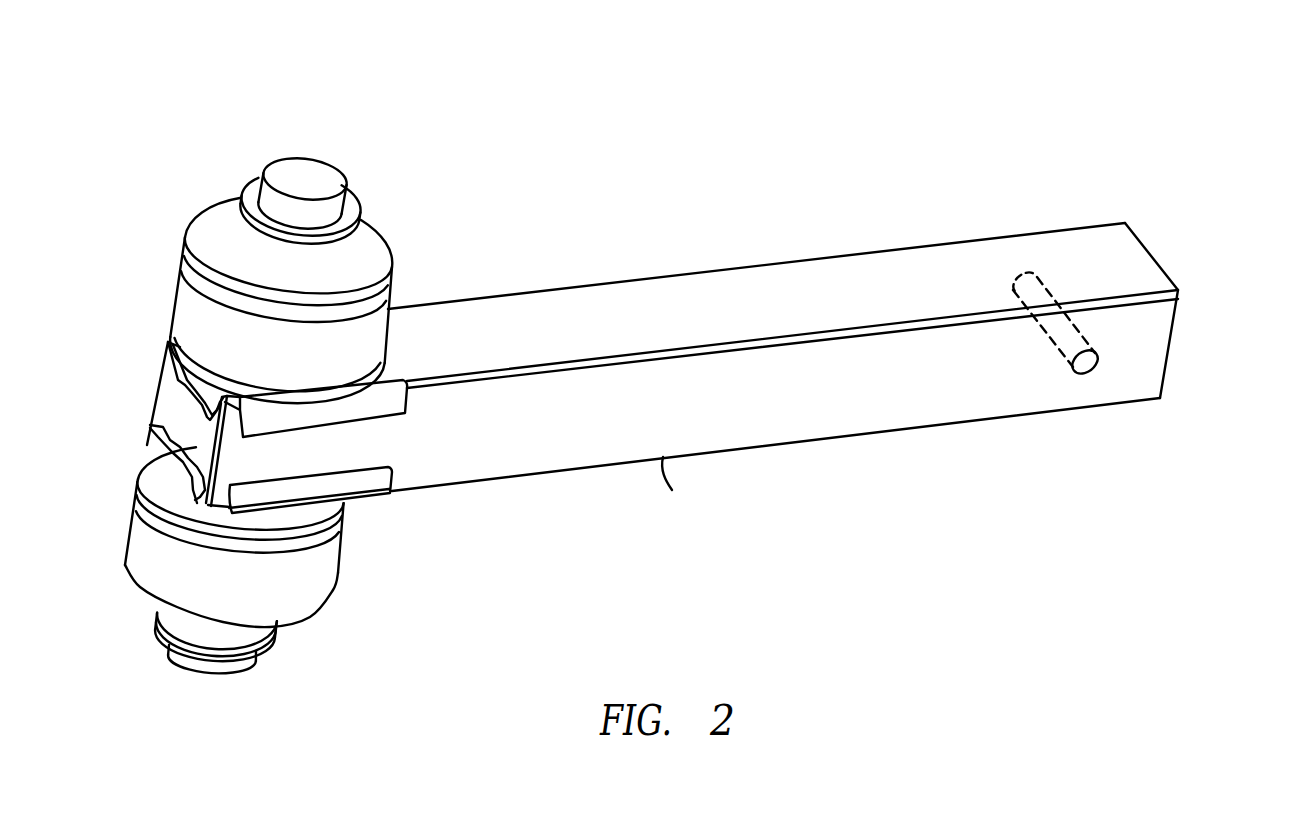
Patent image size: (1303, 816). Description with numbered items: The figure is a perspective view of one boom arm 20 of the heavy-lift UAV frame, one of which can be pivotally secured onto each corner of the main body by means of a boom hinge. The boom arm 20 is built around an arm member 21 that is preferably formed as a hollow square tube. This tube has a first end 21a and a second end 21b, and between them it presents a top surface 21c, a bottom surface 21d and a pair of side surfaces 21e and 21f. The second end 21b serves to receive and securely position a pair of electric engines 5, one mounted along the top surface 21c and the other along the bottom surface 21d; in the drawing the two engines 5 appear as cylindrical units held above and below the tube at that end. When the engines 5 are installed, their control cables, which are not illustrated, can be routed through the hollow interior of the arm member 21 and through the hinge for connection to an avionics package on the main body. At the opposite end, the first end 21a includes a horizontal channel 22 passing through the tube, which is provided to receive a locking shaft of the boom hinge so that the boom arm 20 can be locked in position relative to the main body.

The boom arm 20 is at (136, 106).
The electric engine 5 is at (187, 236).
The arm member 21 is at (672, 353).
The first end 21a is at (1173, 280).
The second end 21b is at (163, 396).
The top surface 21c is at (738, 292).
The bottom surface 21d is at (677, 506).
The side surface 21e is at (845, 402).
The side surface 21f is at (505, 291).
The horizontal channel 22 is at (1088, 381).